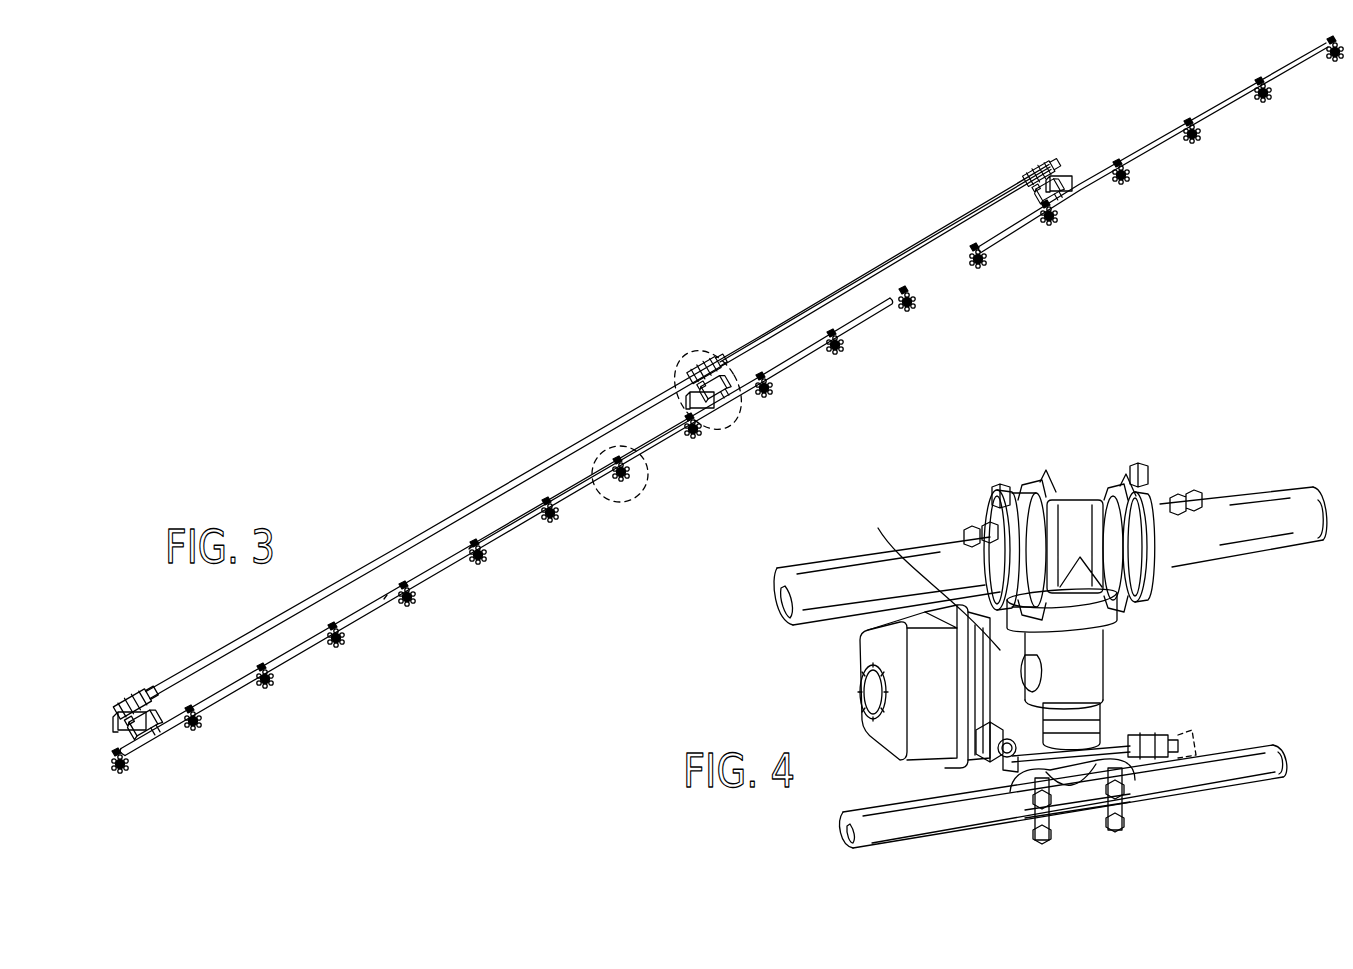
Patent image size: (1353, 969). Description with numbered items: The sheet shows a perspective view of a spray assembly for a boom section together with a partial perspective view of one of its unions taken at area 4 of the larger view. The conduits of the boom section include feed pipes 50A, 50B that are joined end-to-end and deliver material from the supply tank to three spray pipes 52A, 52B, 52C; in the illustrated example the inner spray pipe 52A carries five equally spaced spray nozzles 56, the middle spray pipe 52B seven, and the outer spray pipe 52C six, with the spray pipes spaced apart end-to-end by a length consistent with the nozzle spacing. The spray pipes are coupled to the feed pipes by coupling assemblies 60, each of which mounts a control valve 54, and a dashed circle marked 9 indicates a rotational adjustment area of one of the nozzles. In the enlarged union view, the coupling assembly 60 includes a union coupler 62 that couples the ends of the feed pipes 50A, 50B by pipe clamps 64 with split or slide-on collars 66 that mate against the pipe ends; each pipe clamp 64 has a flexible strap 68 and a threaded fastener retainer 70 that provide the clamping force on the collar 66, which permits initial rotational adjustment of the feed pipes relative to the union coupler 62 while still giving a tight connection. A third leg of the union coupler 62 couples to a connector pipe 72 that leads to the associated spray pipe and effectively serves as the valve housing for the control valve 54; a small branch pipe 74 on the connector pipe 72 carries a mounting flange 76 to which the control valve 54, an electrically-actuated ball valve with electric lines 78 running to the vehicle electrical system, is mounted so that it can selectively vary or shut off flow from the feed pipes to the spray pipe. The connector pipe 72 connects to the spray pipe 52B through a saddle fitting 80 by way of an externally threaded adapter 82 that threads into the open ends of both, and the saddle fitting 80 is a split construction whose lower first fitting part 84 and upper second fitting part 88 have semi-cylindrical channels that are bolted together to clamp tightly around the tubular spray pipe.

In FIG. 3, the area 4- 4 is at (722, 348).
In FIG. 3, the view 9 rotation indication 9 is at (598, 490).
In FIG. 3, the feed pipe 50A is at (422, 530).
In FIG. 4, the feed pipe 50A is at (828, 585).
In FIG. 3, the feed pipe 50B is at (885, 256).
In FIG. 4, the feed pipe 50B is at (1285, 513).
In FIG. 3, the inner spray pipe 52A is at (215, 704).
In FIG. 3, the middle spray pipe 52B is at (502, 534).
In FIG. 4, the middle spray pipe 52B is at (905, 825).
In FIG. 3, the outer spray pipe 52C is at (1004, 252).
In FIG. 3, the control valve 54 is at (120, 712).
In FIG. 4, the control valve 54 is at (868, 650).
In FIG. 3, the spray nozzle 56 is at (122, 772).
In FIG. 3, the coupling assembly 60 is at (134, 690).
In FIG. 4, the coupling assembly 60 is at (1075, 522).
In FIG. 4, the union coupler 62 is at (1093, 498).
In FIG. 4, the pipe clamp 64 is at (1088, 526).
In FIG. 4, the collar 66 is at (990, 508).
In FIG. 4, the flexible strap 68 is at (1005, 493).
In FIG. 4, the threaded fastener retainer 70 is at (1150, 470).
In FIG. 4, the connector pipe 72 is at (1095, 676).
In FIG. 4, the branch pipe 74 is at (1033, 673).
In FIG. 4, the mounting flange 76 is at (878, 530).
In FIG. 4, the electric lines 78 is at (1172, 730).
In FIG. 4, the saddle fitting 80 is at (1062, 820).
In FIG. 4, the externally threaded adapter 82 is at (1044, 720).
In FIG. 4, the first fitting part 84 is at (1020, 832).
In FIG. 4, the second fitting part 88 is at (1002, 775).